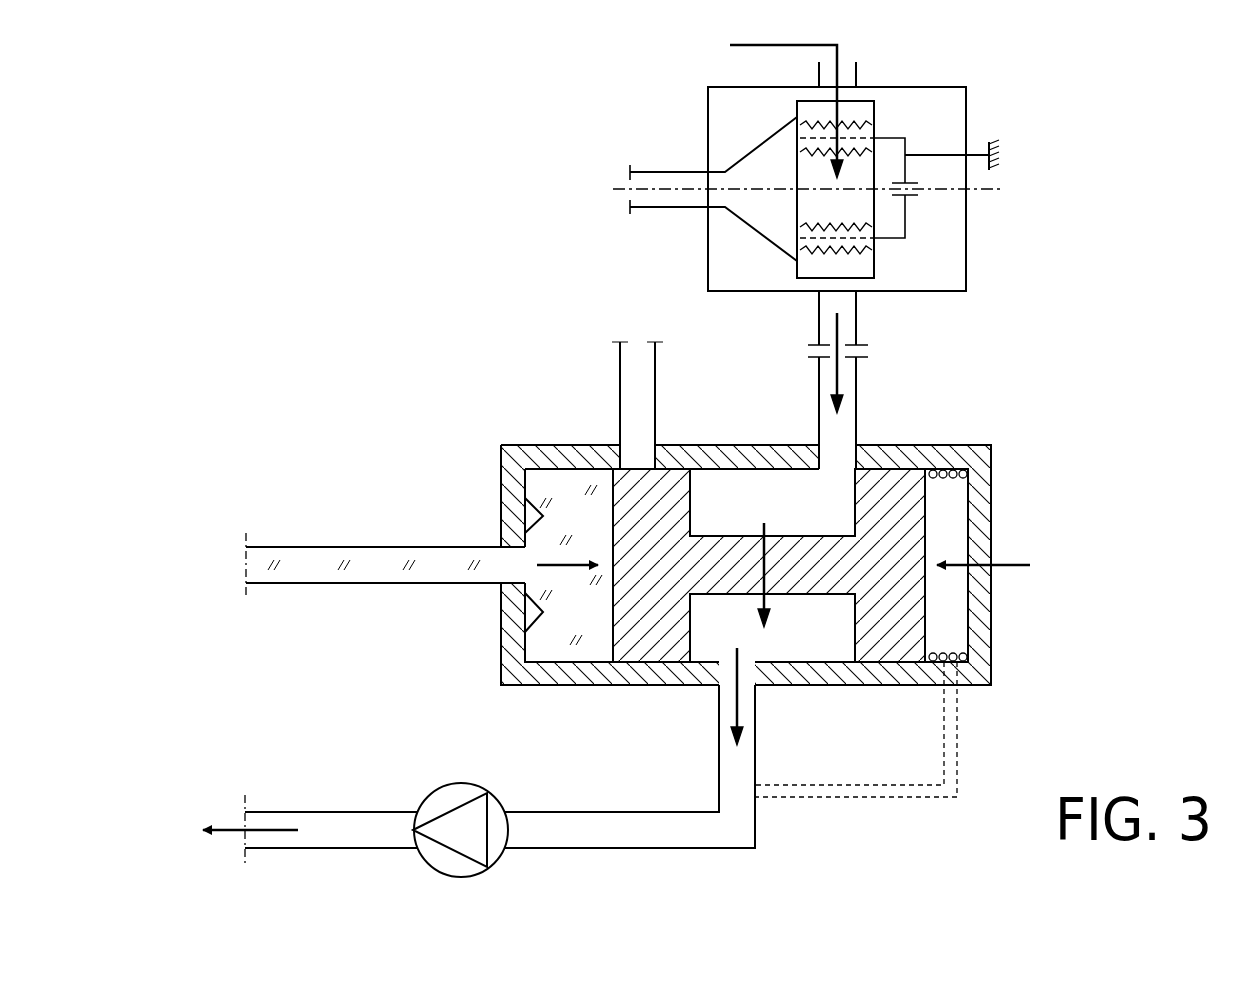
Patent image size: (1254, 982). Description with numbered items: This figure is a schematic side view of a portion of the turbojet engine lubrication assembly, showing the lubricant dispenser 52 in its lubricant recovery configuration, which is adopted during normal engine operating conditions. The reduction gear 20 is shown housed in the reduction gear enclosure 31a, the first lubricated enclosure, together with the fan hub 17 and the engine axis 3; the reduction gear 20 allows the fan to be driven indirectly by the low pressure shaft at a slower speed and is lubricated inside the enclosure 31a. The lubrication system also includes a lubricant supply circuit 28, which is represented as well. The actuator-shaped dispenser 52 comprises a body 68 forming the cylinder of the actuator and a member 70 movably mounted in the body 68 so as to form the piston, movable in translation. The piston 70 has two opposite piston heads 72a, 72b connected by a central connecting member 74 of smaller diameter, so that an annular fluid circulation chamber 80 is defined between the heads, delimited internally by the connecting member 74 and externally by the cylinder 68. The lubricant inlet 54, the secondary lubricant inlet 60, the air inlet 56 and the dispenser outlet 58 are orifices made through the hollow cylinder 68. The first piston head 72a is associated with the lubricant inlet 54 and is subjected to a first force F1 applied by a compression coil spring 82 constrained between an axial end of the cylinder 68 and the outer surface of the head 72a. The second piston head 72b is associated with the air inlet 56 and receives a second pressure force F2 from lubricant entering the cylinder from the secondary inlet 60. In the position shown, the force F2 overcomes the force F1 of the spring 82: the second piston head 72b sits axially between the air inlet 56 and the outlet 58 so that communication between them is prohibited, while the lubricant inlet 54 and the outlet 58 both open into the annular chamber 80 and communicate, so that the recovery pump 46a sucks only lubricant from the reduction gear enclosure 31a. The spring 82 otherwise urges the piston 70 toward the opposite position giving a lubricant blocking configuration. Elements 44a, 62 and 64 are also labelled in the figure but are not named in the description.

The axis 3 is at (1000, 189).
The fan hub 17 is at (655, 171).
The reduction gear 20 is at (890, 250).
The lubricant supply circuit 28 is at (358, 545).
The reduction gear enclosure 31a is at (966, 236).
The return line 44a is at (593, 828).
The recovery pump 46a is at (453, 795).
The lubricant dispenser 52 is at (998, 537).
The lubricant inlet 54 is at (843, 452).
The air inlet 56 is at (632, 455).
The dispenser outlet 58 is at (743, 673).
The secondary lubricant inlet 60 is at (515, 560).
The inlet channel 62 is at (433, 570).
The supply pipe 64 is at (628, 372).
The body 68 is at (992, 598).
The piston 70 is at (903, 620).
The first piston head 72a is at (930, 497).
The second piston head 72b is at (670, 663).
The central connecting member 74 is at (715, 553).
The annular fluid circulation chamber 80 is at (772, 548).
The compression coil spring 82 is at (950, 470).
The first force F1 is at (1030, 560).
The second pressure force F2 is at (562, 560).